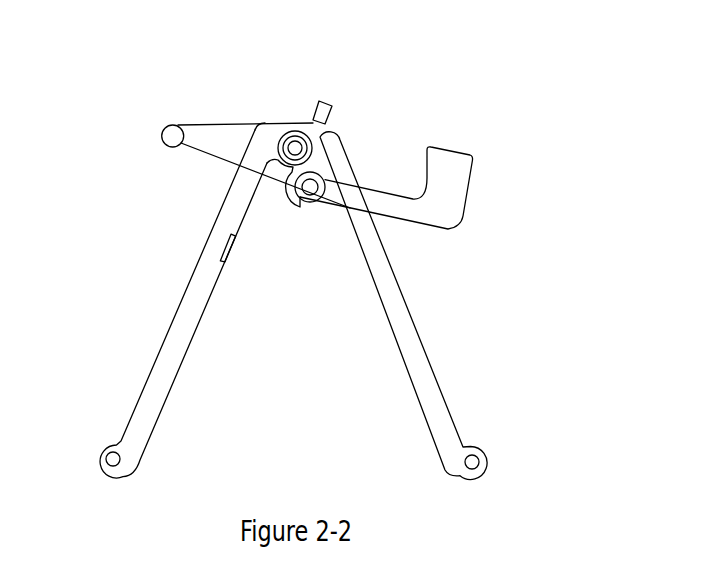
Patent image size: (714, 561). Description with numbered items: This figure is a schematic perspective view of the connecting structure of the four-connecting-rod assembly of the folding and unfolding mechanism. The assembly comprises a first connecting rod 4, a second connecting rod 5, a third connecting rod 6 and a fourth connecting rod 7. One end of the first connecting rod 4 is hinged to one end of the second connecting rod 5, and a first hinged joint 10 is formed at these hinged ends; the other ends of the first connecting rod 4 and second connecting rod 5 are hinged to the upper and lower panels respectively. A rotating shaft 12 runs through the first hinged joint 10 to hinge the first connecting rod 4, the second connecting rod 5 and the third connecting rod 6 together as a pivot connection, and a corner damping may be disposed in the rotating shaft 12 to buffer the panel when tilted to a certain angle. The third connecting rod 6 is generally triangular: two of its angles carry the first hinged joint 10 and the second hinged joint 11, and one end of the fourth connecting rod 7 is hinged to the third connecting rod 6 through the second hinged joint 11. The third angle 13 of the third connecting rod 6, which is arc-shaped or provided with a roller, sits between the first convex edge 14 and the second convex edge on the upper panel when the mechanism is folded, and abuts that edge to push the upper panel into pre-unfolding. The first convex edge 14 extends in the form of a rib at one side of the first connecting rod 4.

The first connecting rod 4 is at (182, 332).
The second connecting rod 5 is at (412, 353).
The third connecting rod 6 is at (233, 135).
The fourth connecting rod 7 is at (437, 213).
The first hinged joint 10 is at (295, 148).
The second hinged joint 11 is at (325, 180).
The rotating shaft 12 is at (295, 148).
The angle 13 is at (172, 136).
The first convex edge 14 is at (227, 248).